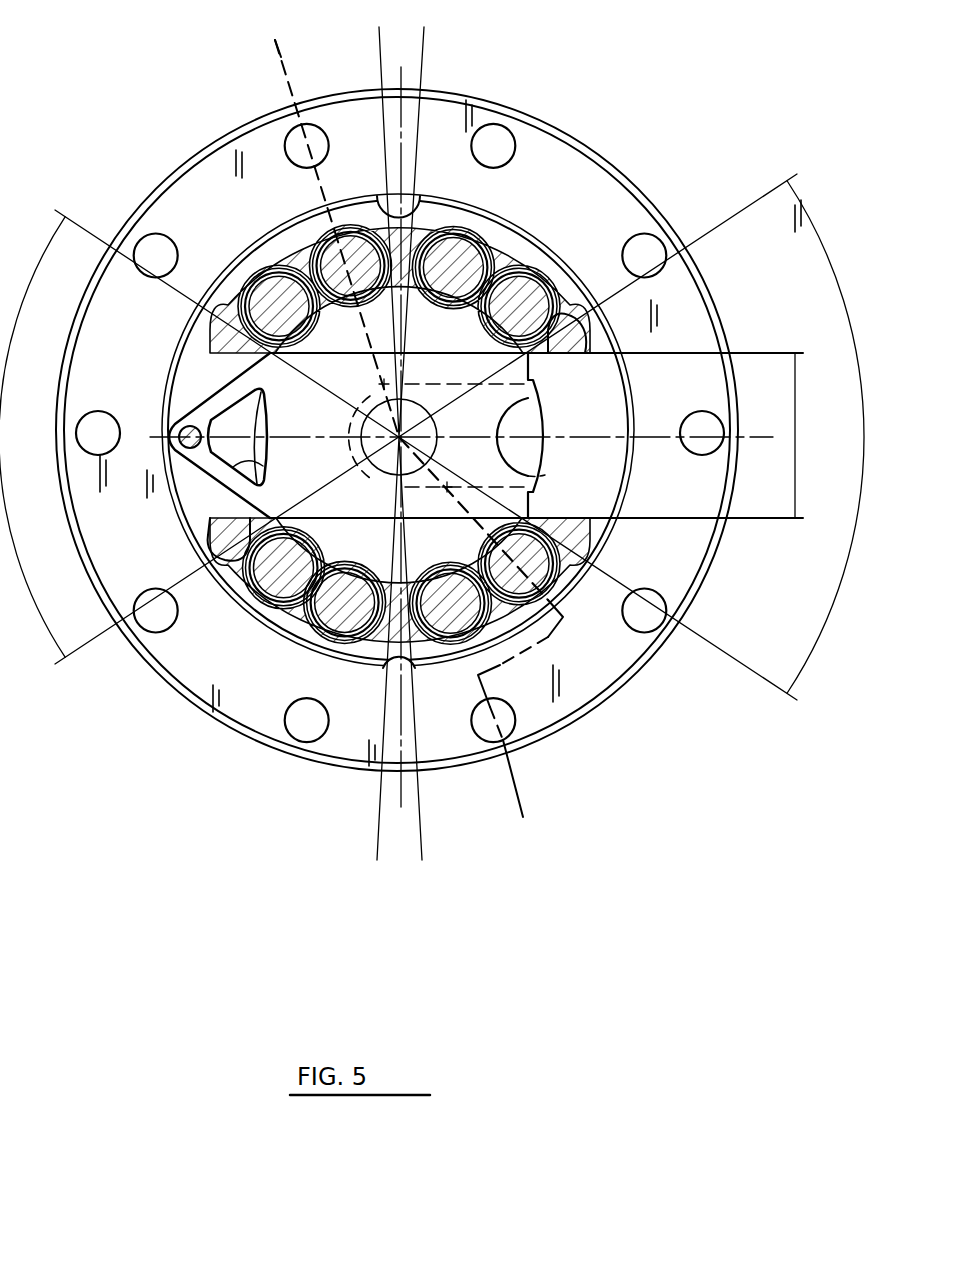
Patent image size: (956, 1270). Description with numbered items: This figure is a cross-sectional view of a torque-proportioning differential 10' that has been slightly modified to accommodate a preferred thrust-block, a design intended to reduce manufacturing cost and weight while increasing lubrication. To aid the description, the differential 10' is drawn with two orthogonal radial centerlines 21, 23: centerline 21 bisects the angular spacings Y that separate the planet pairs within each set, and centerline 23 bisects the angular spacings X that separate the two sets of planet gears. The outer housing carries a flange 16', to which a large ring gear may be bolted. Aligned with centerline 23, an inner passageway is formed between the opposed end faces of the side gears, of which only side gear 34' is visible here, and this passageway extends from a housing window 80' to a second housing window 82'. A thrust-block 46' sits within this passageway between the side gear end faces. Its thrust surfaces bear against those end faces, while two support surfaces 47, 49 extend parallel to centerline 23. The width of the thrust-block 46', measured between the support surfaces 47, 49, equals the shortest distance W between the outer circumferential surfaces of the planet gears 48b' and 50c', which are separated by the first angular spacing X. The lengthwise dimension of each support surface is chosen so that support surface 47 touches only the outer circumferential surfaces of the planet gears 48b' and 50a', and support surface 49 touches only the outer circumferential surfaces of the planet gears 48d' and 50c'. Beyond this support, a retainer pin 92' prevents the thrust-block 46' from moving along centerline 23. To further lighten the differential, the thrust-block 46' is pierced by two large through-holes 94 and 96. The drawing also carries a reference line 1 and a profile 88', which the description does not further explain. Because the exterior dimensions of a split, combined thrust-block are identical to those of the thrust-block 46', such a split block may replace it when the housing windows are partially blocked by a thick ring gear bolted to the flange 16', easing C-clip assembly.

The axis line / direction of cam offset 1 is at (516, 808).
The differential 10' is at (397, 430).
The flange 16' is at (397, 430).
The radial centerline 21 is at (402, 73).
The radial centerline 23 is at (773, 437).
The side gear 34' is at (264, 437).
The thrust-block 46' is at (234, 434).
The support surface 47 is at (420, 352).
The planet gear 48b' is at (459, 277).
The planet gear 48d' is at (286, 593).
The support surface 49 is at (378, 518).
The planet gear 50a' is at (250, 279).
The planet gear 50c' is at (548, 584).
The housing window 80' is at (414, 430).
The housing window 82' is at (195, 540).
The cam block with notch 88' is at (536, 435).
The retainer pin 92' is at (155, 411).
The through-hole 94 is at (266, 466).
The through-hole 96 is at (420, 445).
The shortest distance W is at (795, 354).
The angular spacing X is at (787, 181).
The angular spacing Y is at (421, 845).